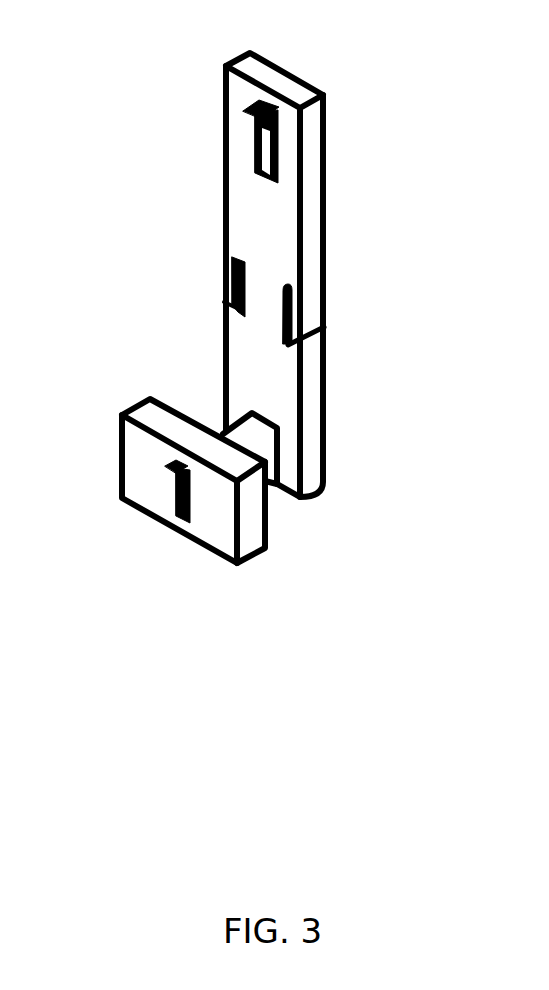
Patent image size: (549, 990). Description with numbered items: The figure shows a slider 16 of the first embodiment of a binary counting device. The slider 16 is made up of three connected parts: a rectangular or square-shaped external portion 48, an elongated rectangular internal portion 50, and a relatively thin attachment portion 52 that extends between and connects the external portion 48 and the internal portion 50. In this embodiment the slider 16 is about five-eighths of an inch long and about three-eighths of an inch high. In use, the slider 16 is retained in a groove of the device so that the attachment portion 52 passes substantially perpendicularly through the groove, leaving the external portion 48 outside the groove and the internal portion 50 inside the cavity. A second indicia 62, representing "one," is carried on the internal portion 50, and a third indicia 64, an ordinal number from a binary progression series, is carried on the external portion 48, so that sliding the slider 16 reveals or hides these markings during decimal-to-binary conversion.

The slider 16 is at (257, 366).
The external portion 48 is at (156, 539).
The internal portion 50 is at (254, 275).
The attachment portion 52 is at (236, 423).
The second indicia 62 is at (245, 119).
The third indicia 64 is at (172, 473).